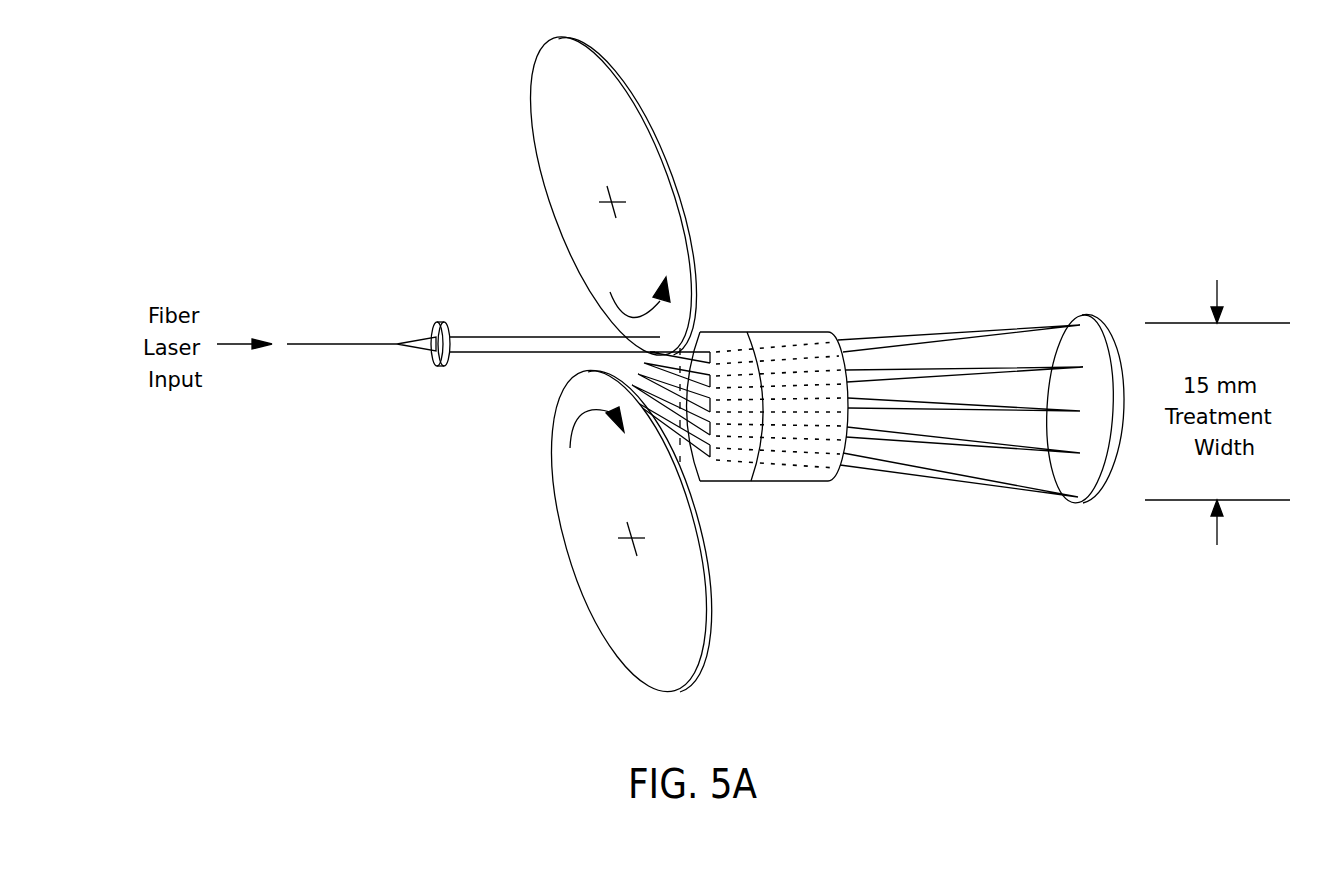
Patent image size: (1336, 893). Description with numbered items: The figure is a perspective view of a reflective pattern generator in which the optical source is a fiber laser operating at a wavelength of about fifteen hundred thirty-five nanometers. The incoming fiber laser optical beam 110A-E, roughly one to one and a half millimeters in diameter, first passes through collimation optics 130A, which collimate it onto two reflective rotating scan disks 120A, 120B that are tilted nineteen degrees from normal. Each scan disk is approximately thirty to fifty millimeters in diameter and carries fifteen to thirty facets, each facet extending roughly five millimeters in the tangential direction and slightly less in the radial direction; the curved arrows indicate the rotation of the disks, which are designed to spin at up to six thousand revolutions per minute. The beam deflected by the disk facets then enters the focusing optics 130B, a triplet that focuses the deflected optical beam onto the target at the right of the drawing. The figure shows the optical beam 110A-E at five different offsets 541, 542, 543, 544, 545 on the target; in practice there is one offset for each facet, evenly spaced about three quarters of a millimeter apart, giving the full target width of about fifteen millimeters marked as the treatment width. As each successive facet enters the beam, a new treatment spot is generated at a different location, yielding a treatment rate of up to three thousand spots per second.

The optical beam 110A-E is at (393, 341).
The collimation optics 130A is at (438, 370).
The reflective rotating scan disk 120A is at (667, 149).
The reflective rotating scan disk 120B is at (713, 607).
The focusing optics 130B is at (784, 331).
The offset 541 is at (1085, 318).
The offset 542 is at (1083, 367).
The offset 543 is at (1080, 411).
The offset 544 is at (1080, 453).
The offset 545 is at (1075, 497).